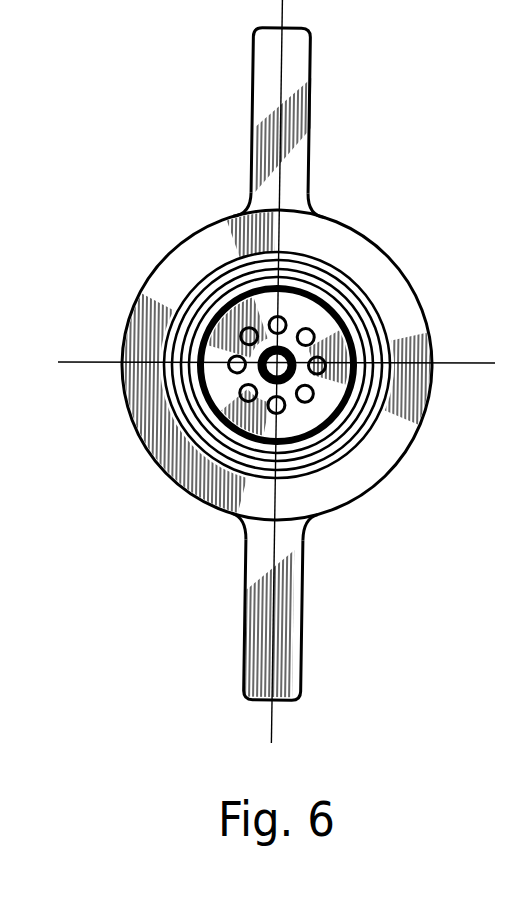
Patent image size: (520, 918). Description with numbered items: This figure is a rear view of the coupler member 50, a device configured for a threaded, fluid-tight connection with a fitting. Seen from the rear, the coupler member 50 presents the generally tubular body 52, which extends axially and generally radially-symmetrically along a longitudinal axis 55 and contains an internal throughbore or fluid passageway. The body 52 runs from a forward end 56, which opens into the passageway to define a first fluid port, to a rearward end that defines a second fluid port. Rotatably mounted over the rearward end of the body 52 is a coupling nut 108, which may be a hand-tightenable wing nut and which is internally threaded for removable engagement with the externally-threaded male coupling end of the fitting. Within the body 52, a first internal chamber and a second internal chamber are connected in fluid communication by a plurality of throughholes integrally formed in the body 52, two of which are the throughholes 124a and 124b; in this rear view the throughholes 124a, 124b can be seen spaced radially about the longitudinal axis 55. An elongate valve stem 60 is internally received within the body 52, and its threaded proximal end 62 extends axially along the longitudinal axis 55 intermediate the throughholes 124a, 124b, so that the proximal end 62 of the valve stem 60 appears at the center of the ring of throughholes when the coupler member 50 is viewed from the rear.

The coupler member 50 is at (416, 95).
The coupling nut 108 is at (338, 225).
The throughhole 124a is at (284, 316).
The throughhole 124b is at (284, 409).
The tubular body 52 is at (378, 303).
The forward end 56 is at (387, 336).
The longitudinal axis 55 is at (264, 374).
The valve stem 60 is at (297, 366).
The proximal end 62 is at (313, 384).